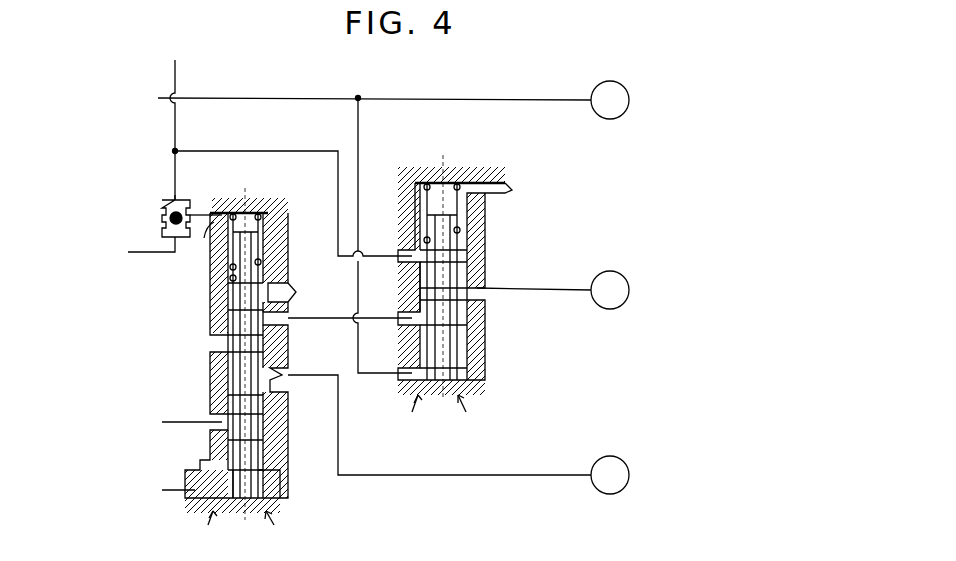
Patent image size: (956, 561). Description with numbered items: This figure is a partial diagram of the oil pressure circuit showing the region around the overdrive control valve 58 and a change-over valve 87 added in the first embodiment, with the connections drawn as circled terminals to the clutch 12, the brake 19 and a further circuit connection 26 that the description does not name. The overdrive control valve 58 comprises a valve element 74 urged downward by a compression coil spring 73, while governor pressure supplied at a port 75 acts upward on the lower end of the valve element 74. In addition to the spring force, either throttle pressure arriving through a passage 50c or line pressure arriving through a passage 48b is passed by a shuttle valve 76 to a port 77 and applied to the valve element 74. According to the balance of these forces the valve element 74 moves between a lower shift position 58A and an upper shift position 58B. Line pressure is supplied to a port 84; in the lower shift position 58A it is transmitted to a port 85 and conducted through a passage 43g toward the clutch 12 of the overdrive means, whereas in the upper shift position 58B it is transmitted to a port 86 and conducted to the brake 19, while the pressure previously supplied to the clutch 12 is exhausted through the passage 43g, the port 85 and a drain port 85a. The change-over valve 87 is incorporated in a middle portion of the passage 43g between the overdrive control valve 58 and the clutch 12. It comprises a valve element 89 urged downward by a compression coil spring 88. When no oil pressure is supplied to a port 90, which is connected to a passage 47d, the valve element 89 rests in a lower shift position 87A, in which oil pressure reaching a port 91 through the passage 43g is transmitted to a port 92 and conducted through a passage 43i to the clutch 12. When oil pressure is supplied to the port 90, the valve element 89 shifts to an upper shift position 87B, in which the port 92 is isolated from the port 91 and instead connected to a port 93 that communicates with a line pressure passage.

The clutch 12 is at (610, 290).
The brake 19 is at (610, 475).
The line to component 26 is at (610, 100).
The passage 43g is at (342, 322).
The passage 43i is at (550, 288).
The passage 47d is at (344, 97).
The passage 48b is at (176, 130).
The passage 50c is at (142, 254).
The overdrive control valve 58 is at (284, 200).
The lower shift position 58A is at (209, 515).
The upper shift position 58B is at (274, 515).
The compression coil spring 73 is at (264, 237).
The valve element 74 is at (264, 264).
The port 75 is at (182, 482).
The shuttle valve 76 is at (162, 200).
The port 77 is at (198, 241).
The port 84 is at (210, 348).
The port 85 is at (276, 320).
The drain port 85a is at (313, 293).
The port 86 is at (284, 374).
The change-over valve 87 is at (480, 165).
The lower shift position 87A is at (412, 412).
The upper shift position 87B is at (466, 412).
The compression coil spring 88 is at (455, 202).
The valve element 89 is at (455, 228).
The port 90 is at (402, 378).
The port 91 is at (398, 318).
The port 92 is at (477, 290).
The port 93 is at (396, 254).